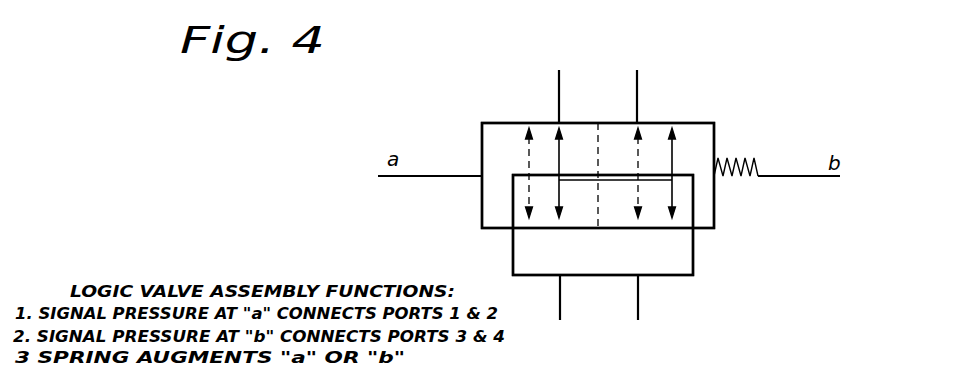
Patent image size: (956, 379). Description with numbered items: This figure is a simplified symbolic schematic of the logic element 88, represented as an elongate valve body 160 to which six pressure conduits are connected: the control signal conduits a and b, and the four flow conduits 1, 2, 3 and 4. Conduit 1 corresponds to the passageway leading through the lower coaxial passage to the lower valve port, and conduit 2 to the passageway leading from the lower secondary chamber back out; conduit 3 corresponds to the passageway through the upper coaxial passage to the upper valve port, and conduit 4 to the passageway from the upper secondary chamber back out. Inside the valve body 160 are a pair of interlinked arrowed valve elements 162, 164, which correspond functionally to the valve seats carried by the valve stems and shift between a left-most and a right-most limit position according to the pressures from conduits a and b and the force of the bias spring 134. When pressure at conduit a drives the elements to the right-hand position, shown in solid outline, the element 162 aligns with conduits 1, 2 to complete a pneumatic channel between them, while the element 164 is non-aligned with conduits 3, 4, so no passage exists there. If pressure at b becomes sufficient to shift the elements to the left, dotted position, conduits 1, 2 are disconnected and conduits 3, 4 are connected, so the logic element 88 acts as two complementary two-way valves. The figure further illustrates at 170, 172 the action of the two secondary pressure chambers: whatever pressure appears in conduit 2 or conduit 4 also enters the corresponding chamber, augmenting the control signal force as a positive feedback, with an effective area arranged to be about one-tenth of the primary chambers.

The logic element 88 is at (694, 74).
The valve body 160 is at (706, 230).
The arrowed valve element 162 is at (528, 155).
The arrowed valve element 164 is at (673, 152).
The bias spring 134 is at (734, 160).
The secondary pressure chamber action 170 is at (513, 247).
The secondary pressure chamber action 172 is at (697, 270).
The conduit 1 is at (549, 96).
The conduit 2 is at (550, 297).
The conduit 3 is at (648, 96).
The conduit 4 is at (649, 297).